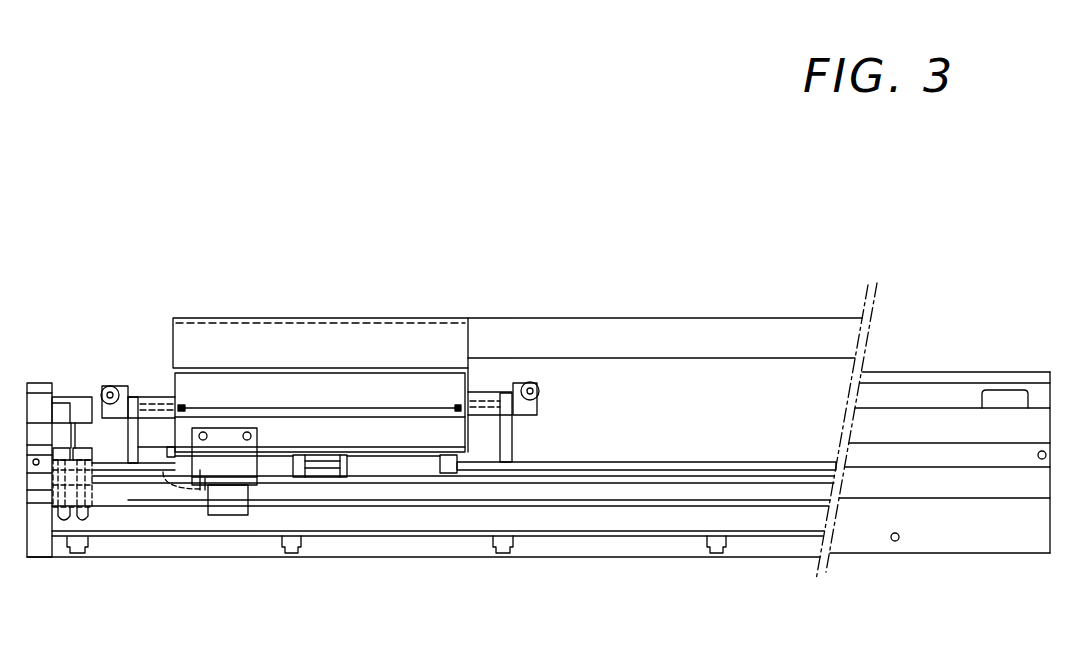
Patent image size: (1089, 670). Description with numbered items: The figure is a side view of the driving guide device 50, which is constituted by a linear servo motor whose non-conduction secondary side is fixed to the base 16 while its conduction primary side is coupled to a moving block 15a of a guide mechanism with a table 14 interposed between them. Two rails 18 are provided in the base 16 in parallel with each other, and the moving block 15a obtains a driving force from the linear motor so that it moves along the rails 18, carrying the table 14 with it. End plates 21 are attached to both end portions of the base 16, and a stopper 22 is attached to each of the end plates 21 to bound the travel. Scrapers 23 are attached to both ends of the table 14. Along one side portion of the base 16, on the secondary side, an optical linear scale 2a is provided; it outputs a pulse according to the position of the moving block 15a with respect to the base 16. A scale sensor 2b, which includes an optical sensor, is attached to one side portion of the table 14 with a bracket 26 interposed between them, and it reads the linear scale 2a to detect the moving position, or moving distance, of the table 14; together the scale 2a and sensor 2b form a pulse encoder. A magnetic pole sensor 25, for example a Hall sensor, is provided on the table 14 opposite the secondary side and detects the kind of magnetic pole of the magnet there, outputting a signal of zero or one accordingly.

The driving guide device 50 is at (712, 258).
The table 14 is at (402, 318).
The rails 18 is at (610, 462).
The end plates 21 is at (39, 383).
The stopper 22 is at (75, 397).
The bracket 26 is at (222, 452).
The scrapers 23 is at (161, 440).
The scale sensor 2b is at (223, 515).
The moving block 15a is at (267, 463).
The magnetic pole sensor 25 is at (322, 457).
The optical linear scale 2a is at (363, 506).
The base 16 is at (763, 540).